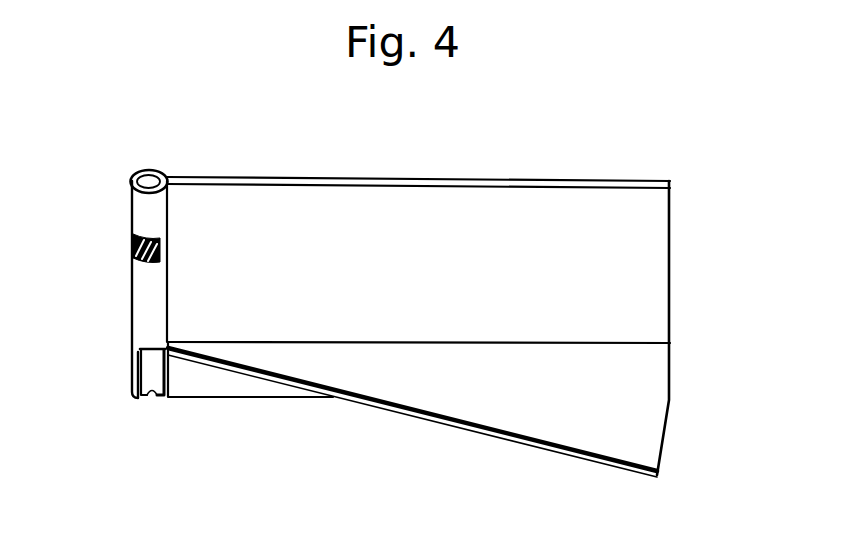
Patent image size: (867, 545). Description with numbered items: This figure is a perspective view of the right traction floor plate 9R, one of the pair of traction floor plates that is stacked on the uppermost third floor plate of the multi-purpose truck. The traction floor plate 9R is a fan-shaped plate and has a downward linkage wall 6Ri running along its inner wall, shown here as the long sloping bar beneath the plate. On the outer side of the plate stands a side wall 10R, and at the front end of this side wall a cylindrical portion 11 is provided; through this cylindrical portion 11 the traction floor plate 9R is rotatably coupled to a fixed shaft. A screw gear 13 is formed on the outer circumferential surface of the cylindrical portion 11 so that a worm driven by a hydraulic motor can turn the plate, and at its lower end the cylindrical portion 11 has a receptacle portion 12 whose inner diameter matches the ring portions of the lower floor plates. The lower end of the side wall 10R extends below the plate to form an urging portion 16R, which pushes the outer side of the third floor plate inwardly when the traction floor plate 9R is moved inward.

The side wall 10R is at (489, 198).
The urging portion 16R is at (213, 383).
The traction floor plate 9R is at (650, 425).
The downward linkage wall 6Ri is at (578, 457).
The cylindrical portion 11 is at (140, 315).
The screw gear 13 is at (133, 248).
The receptacle portion 12 is at (150, 380).